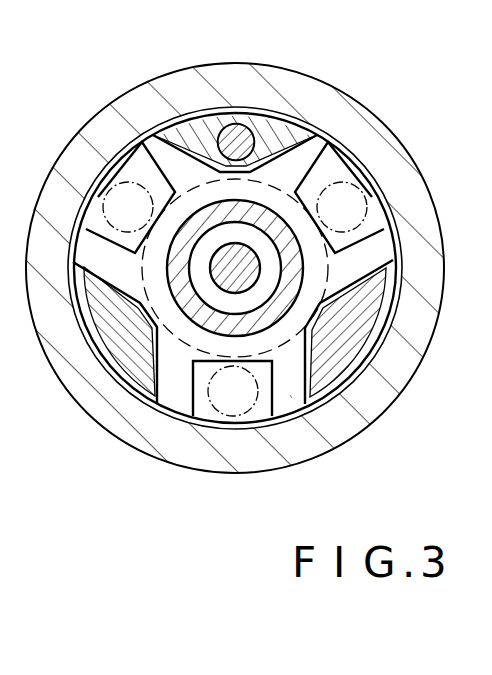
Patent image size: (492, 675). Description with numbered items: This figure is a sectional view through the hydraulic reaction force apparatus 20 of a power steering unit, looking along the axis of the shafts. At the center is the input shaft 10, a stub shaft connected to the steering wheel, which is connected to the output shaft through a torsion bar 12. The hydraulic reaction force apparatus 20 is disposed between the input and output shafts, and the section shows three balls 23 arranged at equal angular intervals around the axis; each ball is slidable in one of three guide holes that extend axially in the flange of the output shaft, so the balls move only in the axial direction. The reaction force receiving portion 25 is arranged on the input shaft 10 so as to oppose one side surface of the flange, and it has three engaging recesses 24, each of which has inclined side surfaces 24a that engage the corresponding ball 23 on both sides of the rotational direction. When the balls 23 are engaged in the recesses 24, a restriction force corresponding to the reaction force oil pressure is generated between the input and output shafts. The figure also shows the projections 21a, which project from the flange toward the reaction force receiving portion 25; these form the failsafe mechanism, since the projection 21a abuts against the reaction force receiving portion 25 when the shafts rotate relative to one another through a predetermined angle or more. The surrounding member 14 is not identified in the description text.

The input shaft 10 is at (192, 310).
The torsion bar 12 is at (218, 275).
The outer ring 14 is at (290, 88).
The hydraulic reaction force apparatus 20 is at (246, 108).
The projection 21a is at (374, 327).
The balls 23 is at (200, 178).
The engaging recesses 24 is at (130, 178).
The inclined side surfaces 24a is at (346, 180).
The reaction force receiving portion 25 is at (288, 393).